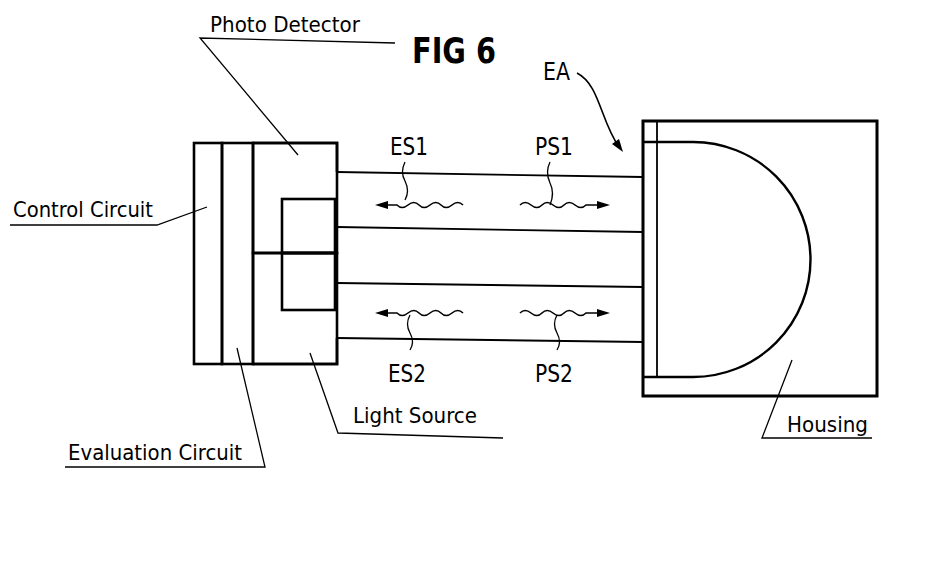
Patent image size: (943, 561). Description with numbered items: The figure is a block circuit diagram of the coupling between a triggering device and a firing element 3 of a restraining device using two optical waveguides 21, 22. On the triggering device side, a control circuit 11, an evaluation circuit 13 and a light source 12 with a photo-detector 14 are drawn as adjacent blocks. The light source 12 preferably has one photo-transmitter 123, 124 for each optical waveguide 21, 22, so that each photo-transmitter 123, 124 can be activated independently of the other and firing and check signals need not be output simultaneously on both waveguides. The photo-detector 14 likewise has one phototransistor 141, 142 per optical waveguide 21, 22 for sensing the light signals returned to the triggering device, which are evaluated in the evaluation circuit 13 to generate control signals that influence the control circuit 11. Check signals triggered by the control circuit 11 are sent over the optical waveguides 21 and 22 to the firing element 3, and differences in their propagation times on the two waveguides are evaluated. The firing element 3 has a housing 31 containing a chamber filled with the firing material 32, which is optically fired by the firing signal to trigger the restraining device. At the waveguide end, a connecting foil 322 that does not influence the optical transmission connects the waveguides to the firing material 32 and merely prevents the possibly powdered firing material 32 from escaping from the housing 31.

The firing element 3 is at (799, 104).
The control circuit 11 is at (211, 140).
The light source 12 is at (293, 367).
The evaluation circuit 13 is at (233, 367).
The photo-detector 14 is at (297, 140).
The first optical waveguide 21 is at (480, 187).
The second optical waveguide 22 is at (478, 330).
The housing 31 is at (851, 186).
The firing material 32 is at (761, 276).
The first photo-transmitter 123 is at (295, 165).
The second photo-transmitter 124 is at (295, 345).
The first phototransistor 141 is at (308, 226).
The second phototransistor 142 is at (308, 281).
The connecting foil 322 is at (653, 153).